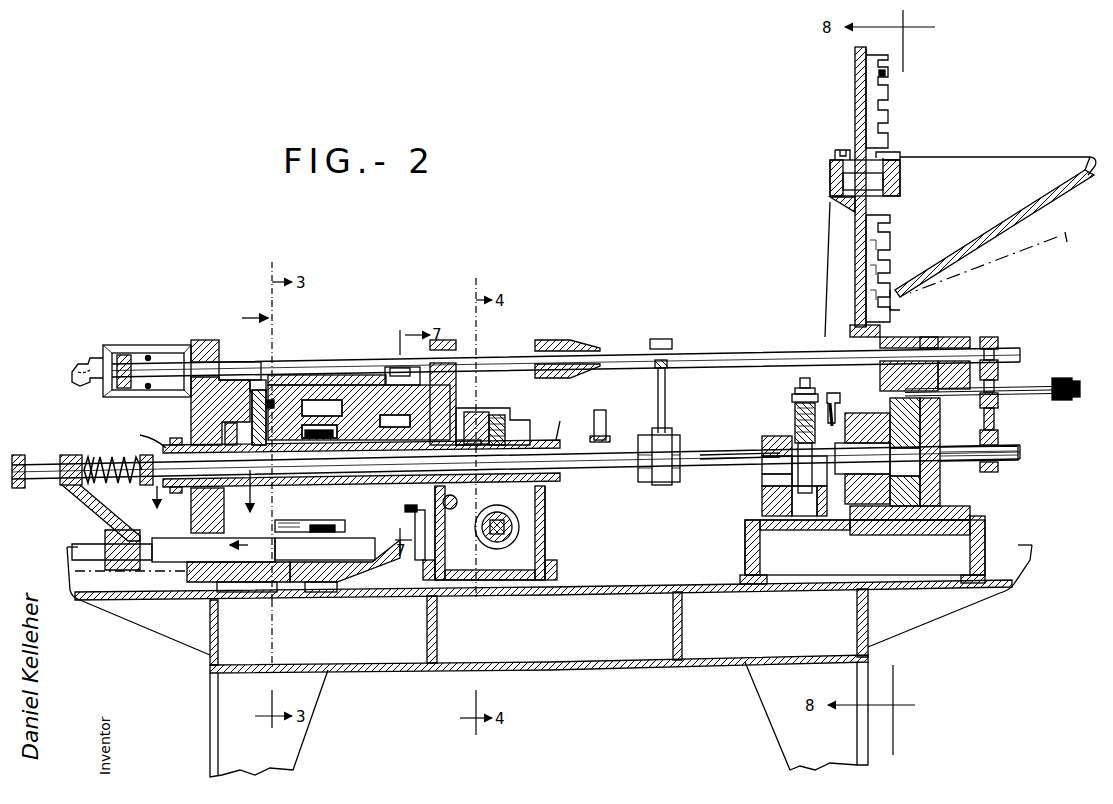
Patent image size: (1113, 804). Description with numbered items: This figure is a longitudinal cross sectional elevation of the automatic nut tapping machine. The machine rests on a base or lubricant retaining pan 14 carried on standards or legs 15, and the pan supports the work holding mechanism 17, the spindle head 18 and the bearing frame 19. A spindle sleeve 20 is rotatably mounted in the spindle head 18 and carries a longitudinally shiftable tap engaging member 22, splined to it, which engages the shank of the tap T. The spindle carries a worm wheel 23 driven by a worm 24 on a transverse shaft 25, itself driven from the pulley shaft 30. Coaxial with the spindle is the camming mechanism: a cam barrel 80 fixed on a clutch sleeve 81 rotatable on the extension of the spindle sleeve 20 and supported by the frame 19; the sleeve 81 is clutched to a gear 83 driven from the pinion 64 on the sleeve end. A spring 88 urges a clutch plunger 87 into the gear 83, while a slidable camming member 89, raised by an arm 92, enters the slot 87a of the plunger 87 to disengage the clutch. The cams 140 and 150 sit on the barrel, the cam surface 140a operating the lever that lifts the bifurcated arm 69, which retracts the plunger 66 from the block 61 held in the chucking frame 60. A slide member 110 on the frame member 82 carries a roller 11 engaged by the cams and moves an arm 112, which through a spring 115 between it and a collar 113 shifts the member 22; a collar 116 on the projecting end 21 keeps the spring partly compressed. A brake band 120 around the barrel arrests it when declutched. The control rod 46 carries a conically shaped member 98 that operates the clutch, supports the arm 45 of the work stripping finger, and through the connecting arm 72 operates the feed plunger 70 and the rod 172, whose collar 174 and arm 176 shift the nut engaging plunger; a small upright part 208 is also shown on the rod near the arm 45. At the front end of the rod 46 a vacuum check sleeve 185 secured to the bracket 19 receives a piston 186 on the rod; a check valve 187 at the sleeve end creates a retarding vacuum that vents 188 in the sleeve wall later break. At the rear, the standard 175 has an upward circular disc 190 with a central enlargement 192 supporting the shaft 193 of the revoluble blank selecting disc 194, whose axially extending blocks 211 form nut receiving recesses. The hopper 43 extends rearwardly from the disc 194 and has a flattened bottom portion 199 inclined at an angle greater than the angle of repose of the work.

The axially extending blocks 211 is at (890, 78).
The circular disc 190 is at (855, 112).
The blank selecting disc 194 is at (890, 100).
The hopper 43 is at (943, 170).
The shaft 193 is at (830, 182).
The central enlargement 192 is at (833, 203).
The flattened bottom portion 199 is at (987, 242).
The standard 175 is at (932, 340).
The vents 188 is at (148, 355).
The sleeve 185 is at (170, 345).
The piston 186 is at (122, 352).
The check valve 187 is at (80, 368).
The spindle sleeve 20 is at (345, 431).
The bearing frame 19 is at (212, 358).
The arm 92 is at (262, 388).
The slot 87a is at (300, 400).
The cam 140 is at (262, 395).
The cam surface 140a is at (395, 370).
The spindle head 18 is at (448, 352).
The control rod 46 is at (497, 360).
The conically shaped member 98 is at (572, 350).
The worm wheel 23 is at (490, 420).
The stop pin 208 is at (600, 412).
The upwardly extending arm 45 is at (667, 403).
The bifurcated arm 69 is at (798, 395).
The plunger 66 is at (795, 425).
The arm 176 is at (828, 395).
The work holding mechanism 17 is at (868, 425).
The rod 172 is at (1038, 392).
The collar 174 is at (1058, 400).
The block 61 is at (762, 446).
The tap T is at (733, 456).
The collar 116 is at (24, 455).
The tap engaging member 22 is at (48, 462).
The pinion 64 is at (176, 440).
The clutch camming member 89 is at (270, 386).
The clutch plunger 87 is at (322, 395).
The cam barrel 80 is at (345, 408).
The clutch sleeve 81 is at (378, 412).
The spring member 88 is at (330, 423).
The chucking frame 60 is at (762, 492).
The connecting arm 72 is at (1000, 430).
The feed plunger 70 is at (972, 458).
The arm 112 is at (85, 503).
The spring member 115 is at (110, 486).
The collar 113 is at (148, 488).
The gear 83 is at (200, 490).
The projecting end 21 is at (207, 501).
The slide member 110 is at (240, 550).
The roller 11 is at (323, 527).
The brake band 120 is at (412, 512).
The pulley shaft 30 is at (452, 510).
The worm 24 is at (520, 520).
The shaft 25 is at (505, 540).
The frame member 82 is at (345, 558).
The pan 14 is at (131, 566).
The cam 150 is at (286, 588).
The legs 15 is at (549, 661).